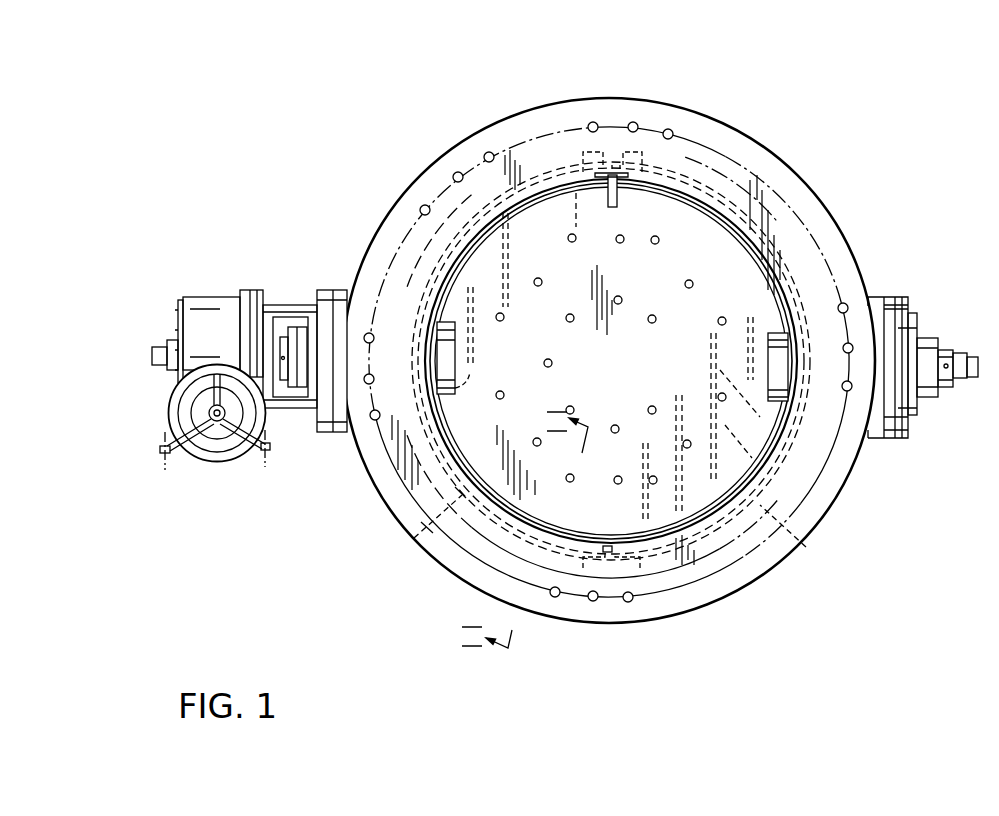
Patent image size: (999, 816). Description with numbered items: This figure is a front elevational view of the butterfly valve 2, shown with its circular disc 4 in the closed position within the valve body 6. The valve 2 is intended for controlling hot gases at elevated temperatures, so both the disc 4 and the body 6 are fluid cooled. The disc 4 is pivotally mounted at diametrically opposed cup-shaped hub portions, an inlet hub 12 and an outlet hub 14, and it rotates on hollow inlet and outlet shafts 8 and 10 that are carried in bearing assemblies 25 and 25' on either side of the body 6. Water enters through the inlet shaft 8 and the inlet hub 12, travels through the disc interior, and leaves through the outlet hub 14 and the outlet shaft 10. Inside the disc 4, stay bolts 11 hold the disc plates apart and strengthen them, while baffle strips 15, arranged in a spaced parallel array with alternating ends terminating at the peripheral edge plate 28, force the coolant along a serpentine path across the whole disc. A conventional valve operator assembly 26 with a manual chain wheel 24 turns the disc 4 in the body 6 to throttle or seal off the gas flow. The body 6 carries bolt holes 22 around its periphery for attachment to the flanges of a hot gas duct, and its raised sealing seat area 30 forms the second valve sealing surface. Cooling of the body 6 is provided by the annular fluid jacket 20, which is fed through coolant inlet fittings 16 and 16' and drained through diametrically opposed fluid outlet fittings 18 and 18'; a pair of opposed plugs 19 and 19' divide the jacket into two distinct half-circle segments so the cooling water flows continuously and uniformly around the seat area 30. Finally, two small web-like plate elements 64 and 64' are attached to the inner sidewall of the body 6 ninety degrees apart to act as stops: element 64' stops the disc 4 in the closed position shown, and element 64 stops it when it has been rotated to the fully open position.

The butterfly valve 2 is at (815, 172).
The circular disc 4 is at (622, 390).
The valve body 6 is at (758, 140).
The inlet shaft 8 is at (160, 350).
The outlet shaft 10 is at (978, 360).
The stay bolts 11 is at (570, 323).
The inlet hub 12 is at (455, 388).
The outlet hub 14 is at (782, 352).
The baffle strips 15 is at (472, 322).
The coolant inlet fitting 16 is at (654, 605).
The coolant inlet fitting 16' is at (566, 607).
The fluid outlet fitting 18 is at (672, 118).
The fluid outlet fitting 18' is at (565, 119).
The plug 19 is at (623, 602).
The plug 19' is at (646, 117).
The fluid jacket 20 is at (412, 541).
The bolt holes 22 is at (593, 122).
The manual chain wheel 24 is at (210, 460).
The bearing assembly 25 is at (322, 335).
The bearing assembly 25' is at (918, 353).
The valve operator assembly 26 is at (214, 297).
The peripheral edge plate 28 is at (703, 205).
The sealing seat area 30 is at (678, 183).
The web-like plate element 64 is at (418, 350).
The web-like plate element 64' is at (640, 202).